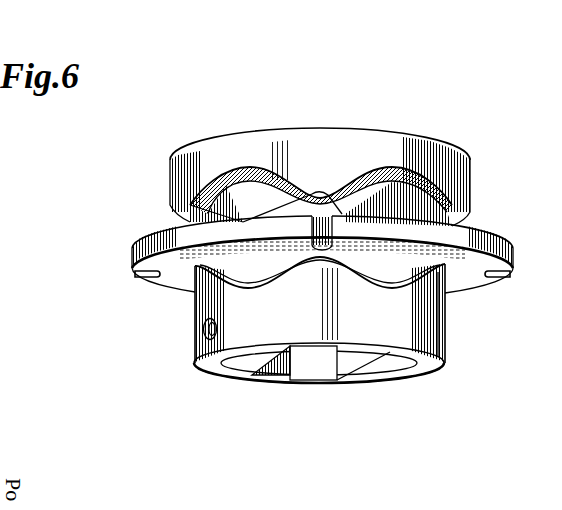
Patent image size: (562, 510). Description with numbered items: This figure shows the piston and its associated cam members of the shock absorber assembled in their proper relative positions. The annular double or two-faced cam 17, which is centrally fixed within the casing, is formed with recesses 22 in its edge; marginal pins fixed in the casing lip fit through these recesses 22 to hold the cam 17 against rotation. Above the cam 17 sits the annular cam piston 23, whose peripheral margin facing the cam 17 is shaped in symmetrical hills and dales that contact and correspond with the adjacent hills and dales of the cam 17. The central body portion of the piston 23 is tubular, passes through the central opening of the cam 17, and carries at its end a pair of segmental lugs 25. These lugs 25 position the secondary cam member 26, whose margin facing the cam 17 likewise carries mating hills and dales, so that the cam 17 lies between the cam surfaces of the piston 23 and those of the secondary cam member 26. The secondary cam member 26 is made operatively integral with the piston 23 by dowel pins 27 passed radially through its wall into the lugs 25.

The annular double or two-faced cam 17 is at (165, 240).
The recesses 22 is at (326, 233).
The annular cam piston 23 is at (338, 142).
The segmental lugs 25 is at (243, 365).
The secondary cam member 26 is at (425, 327).
The dowel pins 27 is at (203, 331).